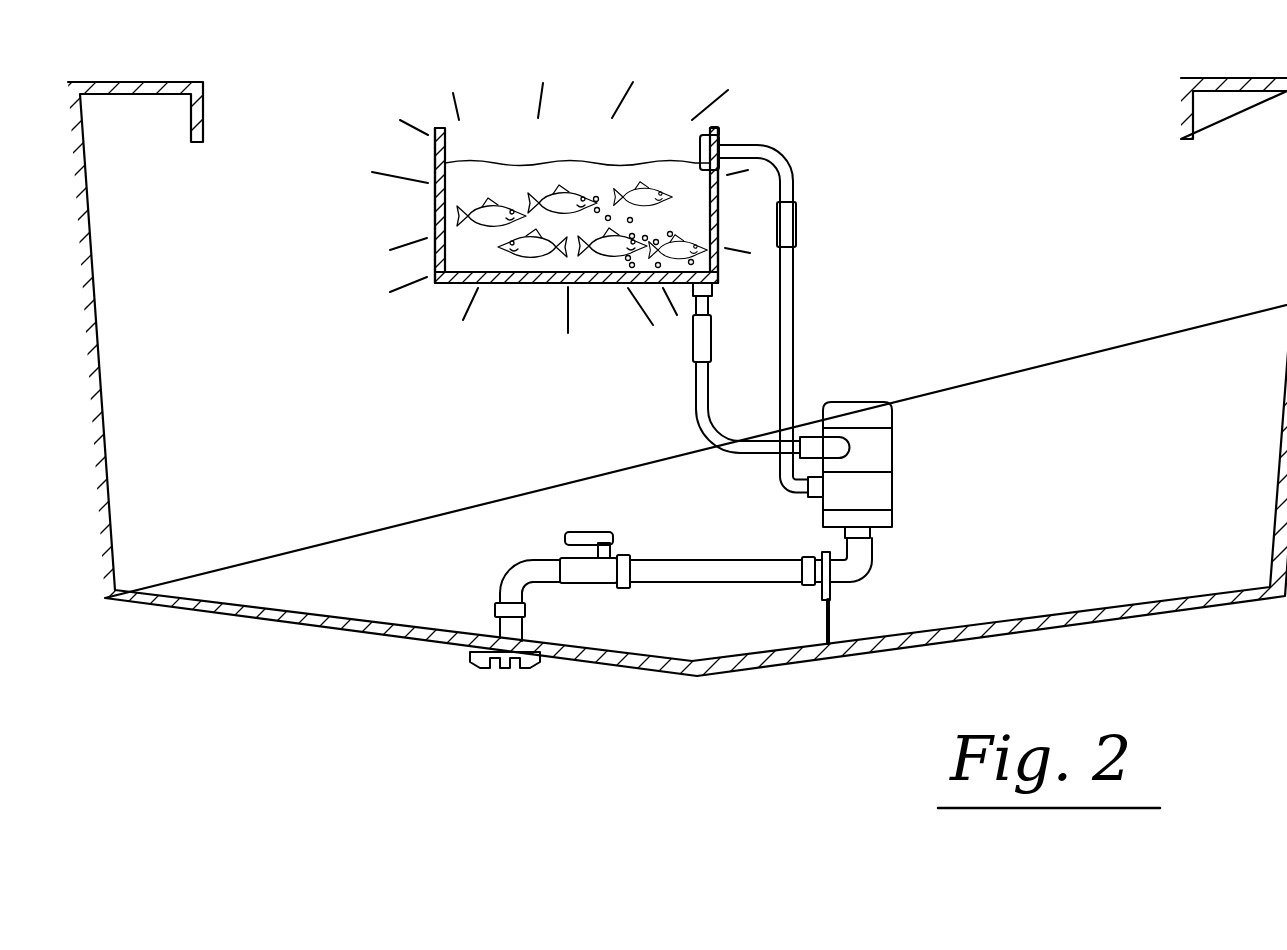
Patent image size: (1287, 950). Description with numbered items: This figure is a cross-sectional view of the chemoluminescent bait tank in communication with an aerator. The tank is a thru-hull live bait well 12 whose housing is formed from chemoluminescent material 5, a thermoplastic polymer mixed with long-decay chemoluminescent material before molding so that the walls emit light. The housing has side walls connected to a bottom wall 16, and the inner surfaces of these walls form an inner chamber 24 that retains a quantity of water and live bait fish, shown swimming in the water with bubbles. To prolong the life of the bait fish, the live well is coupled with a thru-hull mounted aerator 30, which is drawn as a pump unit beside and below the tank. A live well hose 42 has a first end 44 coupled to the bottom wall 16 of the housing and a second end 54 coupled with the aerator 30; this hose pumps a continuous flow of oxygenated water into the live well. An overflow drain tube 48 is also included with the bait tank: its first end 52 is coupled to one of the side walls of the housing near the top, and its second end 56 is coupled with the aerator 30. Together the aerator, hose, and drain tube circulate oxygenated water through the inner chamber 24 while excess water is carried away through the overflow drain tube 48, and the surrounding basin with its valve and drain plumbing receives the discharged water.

The chemoluminescent material 5 is at (443, 127).
The thru-hull live bait well 12 is at (432, 153).
The bottom wall 16 is at (492, 283).
The inner chamber 24 is at (655, 140).
The aerator 30 is at (899, 438).
The live well hose 42 is at (700, 388).
The first end 44 is at (712, 289).
The overflow drain tube 48 is at (793, 187).
The first end 52 is at (720, 147).
The second end 54 is at (807, 437).
The second end 56 is at (800, 488).